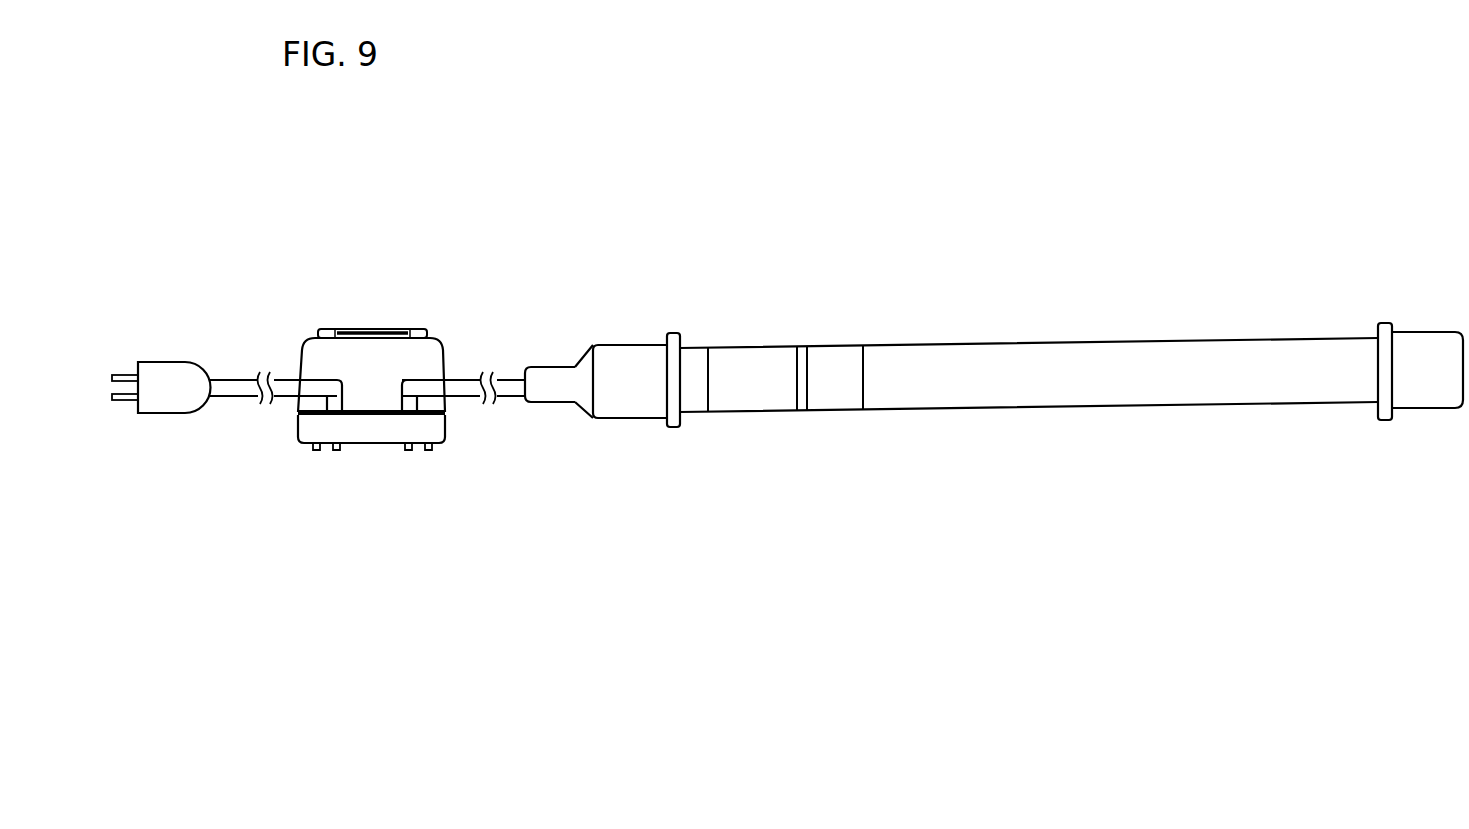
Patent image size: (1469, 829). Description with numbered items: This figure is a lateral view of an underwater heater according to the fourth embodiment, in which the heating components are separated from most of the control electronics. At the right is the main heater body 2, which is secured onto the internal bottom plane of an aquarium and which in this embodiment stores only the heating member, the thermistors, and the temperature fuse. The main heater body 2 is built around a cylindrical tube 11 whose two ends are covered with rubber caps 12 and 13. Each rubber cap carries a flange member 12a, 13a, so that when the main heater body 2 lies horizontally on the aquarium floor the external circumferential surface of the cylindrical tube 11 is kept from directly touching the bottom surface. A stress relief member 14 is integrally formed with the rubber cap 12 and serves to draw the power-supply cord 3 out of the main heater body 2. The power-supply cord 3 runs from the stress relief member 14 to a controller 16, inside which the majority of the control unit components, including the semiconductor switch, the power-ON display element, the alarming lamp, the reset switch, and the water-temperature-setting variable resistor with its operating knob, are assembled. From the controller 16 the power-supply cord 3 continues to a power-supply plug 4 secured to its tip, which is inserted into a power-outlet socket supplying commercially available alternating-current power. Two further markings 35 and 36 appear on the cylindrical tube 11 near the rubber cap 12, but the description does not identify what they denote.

The main heater body 2 is at (1168, 334).
The power-supply cord 3 is at (281, 392).
The power-supply plug 4 is at (180, 404).
The cylindrical tube 11 is at (1025, 356).
The rubber cap 12 is at (625, 355).
The flange member 12a is at (678, 332).
The rubber cap 13 is at (1420, 343).
The flange member 13a is at (1383, 322).
The stress relief member 14 is at (553, 370).
The controller 16 is at (412, 318).
The switch 35 is at (753, 393).
The indicator 36 is at (837, 393).